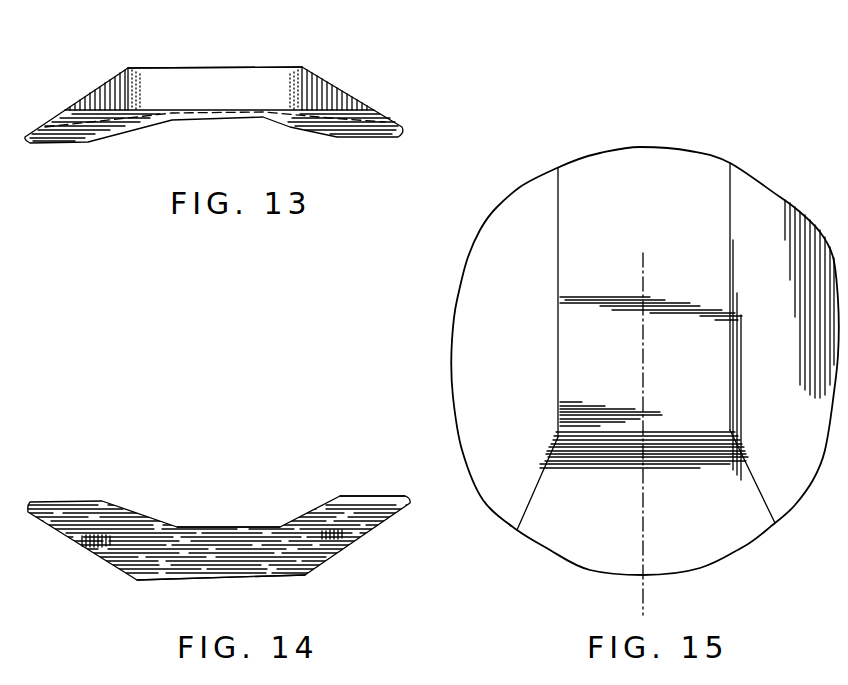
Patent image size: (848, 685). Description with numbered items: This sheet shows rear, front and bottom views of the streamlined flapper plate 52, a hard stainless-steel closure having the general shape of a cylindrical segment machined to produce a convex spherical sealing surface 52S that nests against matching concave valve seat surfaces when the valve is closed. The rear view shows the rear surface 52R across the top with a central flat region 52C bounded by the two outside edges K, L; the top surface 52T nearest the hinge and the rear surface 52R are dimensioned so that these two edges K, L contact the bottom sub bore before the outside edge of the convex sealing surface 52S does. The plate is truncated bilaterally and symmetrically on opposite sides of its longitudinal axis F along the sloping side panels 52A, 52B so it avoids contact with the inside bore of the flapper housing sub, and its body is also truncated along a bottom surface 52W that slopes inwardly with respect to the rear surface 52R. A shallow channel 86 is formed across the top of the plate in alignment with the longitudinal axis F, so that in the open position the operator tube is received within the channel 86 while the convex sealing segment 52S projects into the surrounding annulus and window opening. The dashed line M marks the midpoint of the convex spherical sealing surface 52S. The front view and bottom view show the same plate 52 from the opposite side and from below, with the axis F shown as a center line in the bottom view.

In FIG. 13, the flapper plate 52 is at (345, 66).
In FIG. 14, the flapper plate 52 is at (95, 490).
In FIG. 15, the flapper plate 52 is at (734, 147).
In FIG. 13, the rear surface 52R is at (220, 67).
In FIG. 14, the rear surface 52R is at (192, 579).
In FIG. 15, the rear surface 52R is at (575, 243).
In FIG. 13, the central flat portion 52C is at (265, 93).
In FIG. 13, the sloping side panel 52B is at (78, 100).
In FIG. 15, the sloping side panel 52B is at (765, 197).
In FIG. 13, the sloping side panel 52A is at (360, 100).
In FIG. 15, the sloping side panel 52A is at (477, 302).
In FIG. 13, the convex spherical sealing surface 52S is at (390, 115).
In FIG. 14, the convex spherical sealing surface 52S is at (353, 498).
In FIG. 13, the top surface 52T is at (378, 138).
In FIG. 15, the bottom surface 52W is at (725, 542).
In FIG. 13, the shallow channel 86 is at (263, 122).
In FIG. 14, the shallow channel 86 is at (237, 522).
In FIG. 13, the midpoint of convex spherical sealing surface M is at (88, 136).
In FIG. 14, the midpoint of convex spherical sealing surface M is at (68, 513).
In FIG. 13, the outside edge K is at (127, 64).
In FIG. 14, the outside edge K is at (311, 584).
In FIG. 15, the outside edge K is at (728, 317).
In FIG. 13, the outside edge L is at (302, 63).
In FIG. 14, the outside edge L is at (132, 580).
In FIG. 15, the outside edge L is at (557, 335).
In FIG. 15, the longitudinal axis F is at (643, 260).